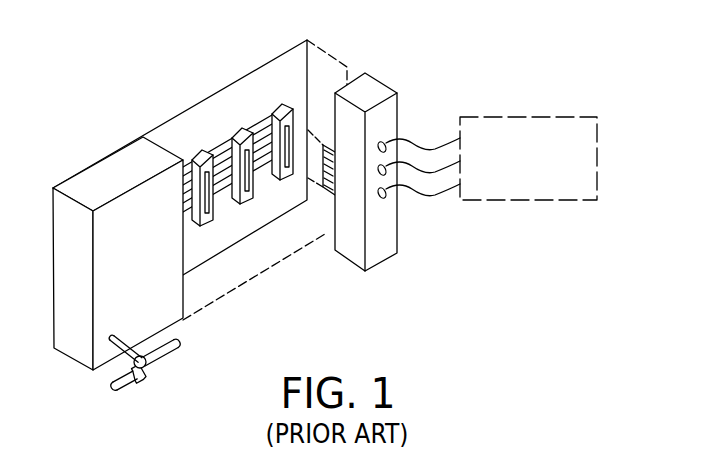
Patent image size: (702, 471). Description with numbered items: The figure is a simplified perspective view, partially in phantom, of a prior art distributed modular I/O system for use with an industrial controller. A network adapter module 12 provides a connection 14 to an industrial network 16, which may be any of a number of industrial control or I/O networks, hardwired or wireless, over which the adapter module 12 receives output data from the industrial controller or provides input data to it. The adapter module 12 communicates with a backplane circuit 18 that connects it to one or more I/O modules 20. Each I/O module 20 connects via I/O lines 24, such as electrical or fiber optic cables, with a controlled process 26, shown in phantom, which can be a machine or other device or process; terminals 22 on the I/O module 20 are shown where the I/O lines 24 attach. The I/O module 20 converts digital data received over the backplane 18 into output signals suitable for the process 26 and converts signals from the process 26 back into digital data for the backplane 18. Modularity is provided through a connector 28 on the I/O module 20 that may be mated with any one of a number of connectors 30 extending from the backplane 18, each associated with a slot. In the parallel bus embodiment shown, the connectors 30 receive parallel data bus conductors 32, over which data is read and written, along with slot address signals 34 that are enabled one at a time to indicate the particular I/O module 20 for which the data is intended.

The network adapter module 12 is at (103, 187).
The connection 14 is at (130, 358).
The industrial network 16 is at (130, 389).
The backplane circuit 18 is at (242, 78).
The I/O module 20 is at (368, 93).
The terminals 22 is at (390, 198).
The I/O lines 24 is at (417, 160).
The controlled process 26 is at (512, 170).
The connector 28 is at (328, 195).
The connectors 30 is at (290, 107).
The parallel data bus conductors 32 is at (222, 165).
The slot address signals 34 is at (263, 170).